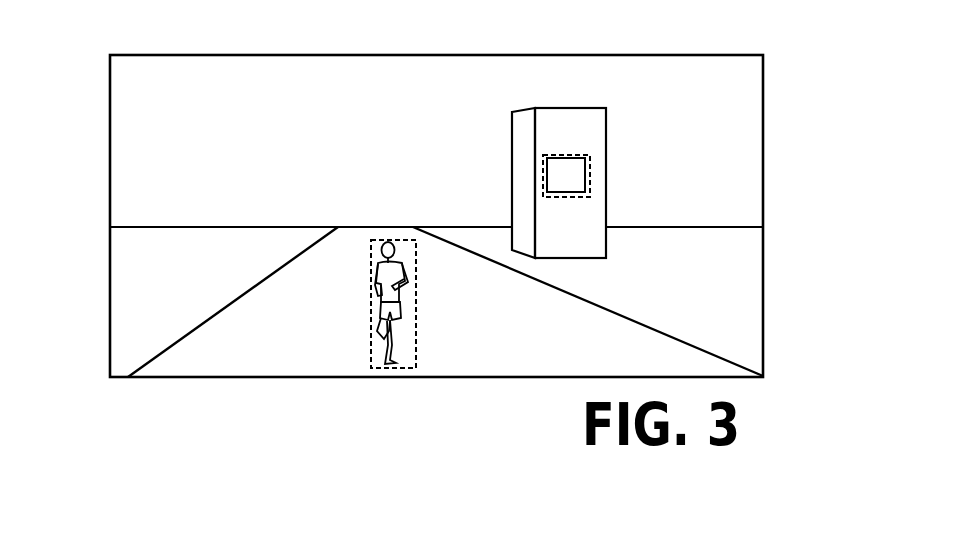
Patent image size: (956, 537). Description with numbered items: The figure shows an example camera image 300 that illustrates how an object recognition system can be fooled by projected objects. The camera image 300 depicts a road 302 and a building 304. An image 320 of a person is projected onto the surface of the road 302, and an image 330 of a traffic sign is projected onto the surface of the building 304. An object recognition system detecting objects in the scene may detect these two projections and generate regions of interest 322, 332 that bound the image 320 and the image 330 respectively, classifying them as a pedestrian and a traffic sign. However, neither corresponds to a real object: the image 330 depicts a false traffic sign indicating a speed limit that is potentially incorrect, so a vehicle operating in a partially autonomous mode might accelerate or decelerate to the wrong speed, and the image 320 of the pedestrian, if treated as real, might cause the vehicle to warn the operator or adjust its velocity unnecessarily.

The camera image 300 is at (773, 22).
The road 302 is at (547, 317).
The building 304 is at (578, 223).
The image of a person 320 is at (372, 313).
The region of interest 322 is at (416, 316).
The image of a traffic sign 330 is at (583, 178).
The region of interest 332 is at (550, 155).